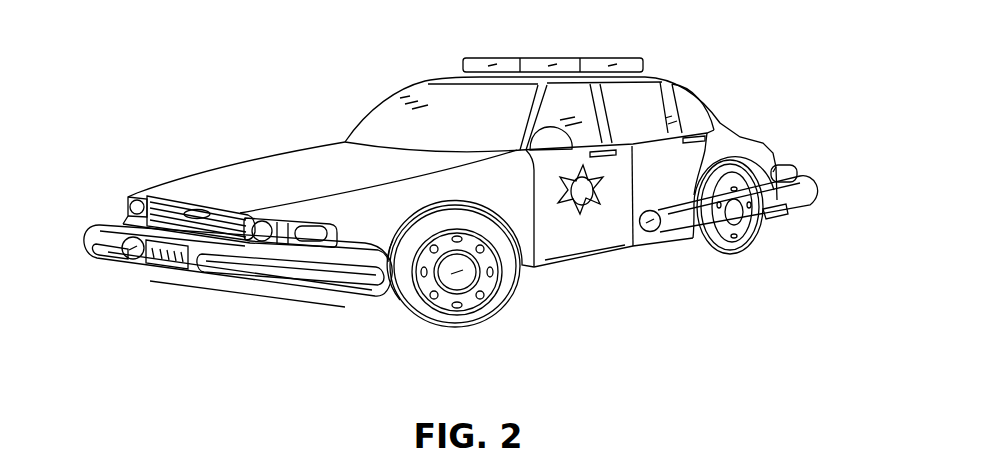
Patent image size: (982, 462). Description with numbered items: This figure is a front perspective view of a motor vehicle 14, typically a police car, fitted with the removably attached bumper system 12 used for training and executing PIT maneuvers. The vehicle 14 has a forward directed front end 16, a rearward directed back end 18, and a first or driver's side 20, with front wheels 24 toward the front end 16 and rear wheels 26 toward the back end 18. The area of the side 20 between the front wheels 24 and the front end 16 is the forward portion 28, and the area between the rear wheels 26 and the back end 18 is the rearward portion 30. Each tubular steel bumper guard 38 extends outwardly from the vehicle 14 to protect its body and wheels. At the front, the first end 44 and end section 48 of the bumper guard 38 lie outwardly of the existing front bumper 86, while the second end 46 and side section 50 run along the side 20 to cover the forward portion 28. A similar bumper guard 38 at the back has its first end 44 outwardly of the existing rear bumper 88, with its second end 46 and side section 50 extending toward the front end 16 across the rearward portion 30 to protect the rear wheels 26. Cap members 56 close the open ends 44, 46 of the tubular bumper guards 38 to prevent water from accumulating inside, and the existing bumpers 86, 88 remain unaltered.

The bumper system 12 is at (469, 238).
The motor vehicle 14 is at (338, 100).
The front end 16 is at (123, 184).
The back end 18 is at (748, 130).
The first side 20 is at (590, 275).
The front wheels 24 is at (470, 320).
The rear wheels 26 is at (752, 240).
The forward portion 28 is at (340, 203).
The rearward portion 30 is at (765, 161).
The bumper guard 38 is at (263, 278).
The first end 44 is at (118, 253).
The second end 46 is at (370, 281).
The end section 48 is at (228, 286).
The side section 50 is at (728, 236).
The cap member 56 is at (134, 259).
The existing front bumper 86 is at (122, 226).
The existing rear bumper 88 is at (787, 176).